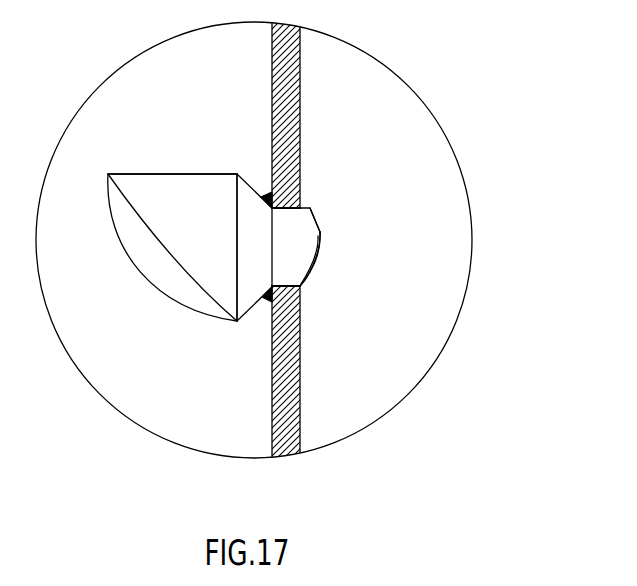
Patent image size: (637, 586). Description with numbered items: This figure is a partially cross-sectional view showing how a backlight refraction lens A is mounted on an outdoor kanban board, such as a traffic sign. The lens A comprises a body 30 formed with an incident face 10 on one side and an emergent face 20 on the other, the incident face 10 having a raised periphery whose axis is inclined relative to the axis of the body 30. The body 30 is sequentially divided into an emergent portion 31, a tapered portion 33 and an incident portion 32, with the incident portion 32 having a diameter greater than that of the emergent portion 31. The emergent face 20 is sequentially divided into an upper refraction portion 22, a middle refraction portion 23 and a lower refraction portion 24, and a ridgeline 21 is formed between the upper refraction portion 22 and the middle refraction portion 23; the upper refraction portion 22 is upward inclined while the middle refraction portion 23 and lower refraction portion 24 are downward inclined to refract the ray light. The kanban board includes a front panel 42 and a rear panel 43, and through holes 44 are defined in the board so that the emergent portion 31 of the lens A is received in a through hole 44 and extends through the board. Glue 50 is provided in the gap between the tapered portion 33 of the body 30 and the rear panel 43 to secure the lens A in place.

The backlight refraction lens A is at (92, 147).
The incident face 10 is at (140, 278).
The emergent face 20 is at (364, 251).
The ridgeline 21 is at (320, 233).
The upper refraction portion 22 is at (315, 218).
The middle refraction portion 23 is at (318, 250).
The lower refraction portion 24 is at (352, 287).
The body 30 is at (190, 193).
The emergent portion 31 is at (250, 213).
The incident portion 32 is at (172, 173).
The tapered portion 33 is at (246, 172).
The front panel 42 is at (300, 105).
The rear panel 43 is at (272, 400).
The through holes 44 is at (286, 279).
The glue 50 is at (268, 293).